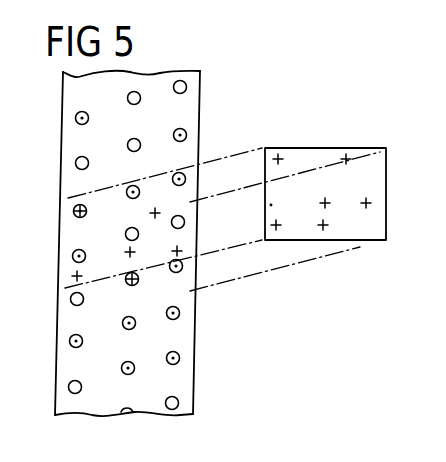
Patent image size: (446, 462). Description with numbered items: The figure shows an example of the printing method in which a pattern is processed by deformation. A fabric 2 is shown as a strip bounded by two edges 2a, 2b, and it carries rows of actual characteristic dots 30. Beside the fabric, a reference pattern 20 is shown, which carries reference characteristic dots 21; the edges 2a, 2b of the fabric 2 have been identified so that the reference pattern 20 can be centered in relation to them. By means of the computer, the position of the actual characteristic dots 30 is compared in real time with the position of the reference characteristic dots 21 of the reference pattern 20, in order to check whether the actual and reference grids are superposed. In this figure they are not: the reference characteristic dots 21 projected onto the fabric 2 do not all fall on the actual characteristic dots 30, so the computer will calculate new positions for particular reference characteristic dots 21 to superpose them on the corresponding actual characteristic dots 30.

The fabric 2 is at (170, 336).
The edge of the fabric 2a is at (55, 391).
The edge of the fabric 2b is at (193, 397).
The reference pattern 20 is at (333, 141).
The reference characteristic dots 21 is at (74, 211).
The actual characteristic dots 30 is at (141, 148).